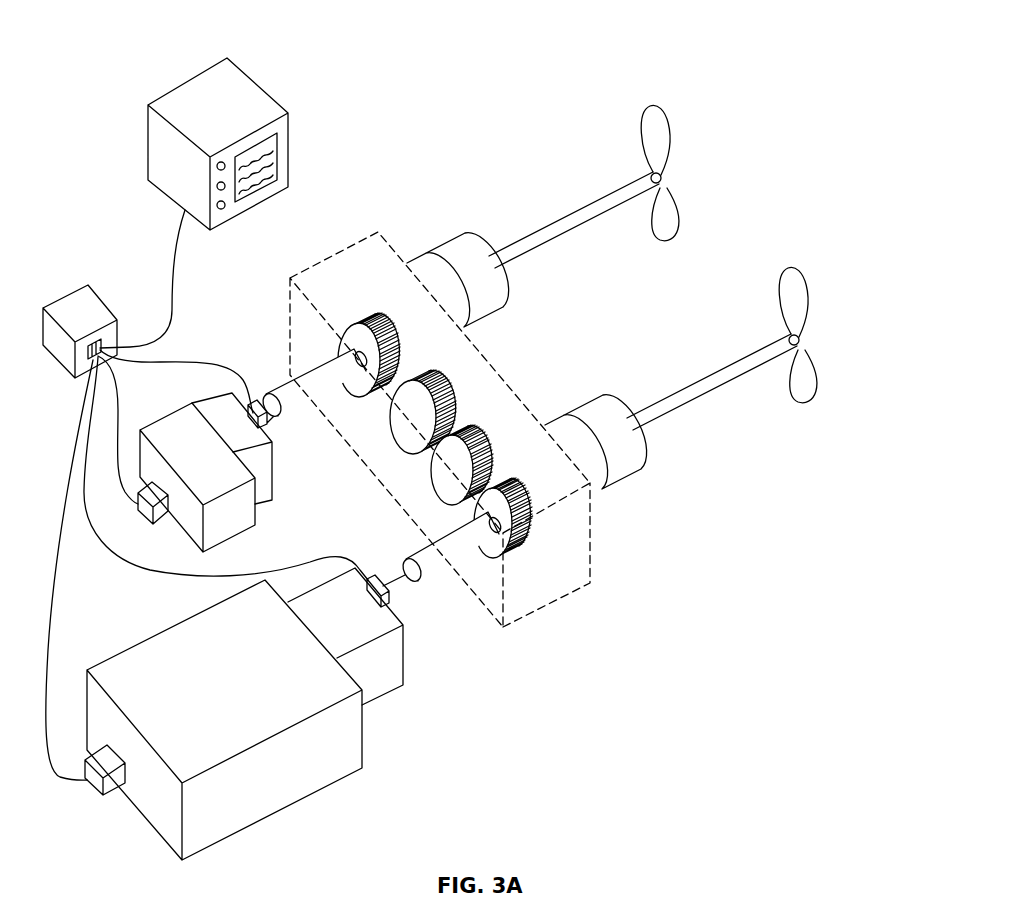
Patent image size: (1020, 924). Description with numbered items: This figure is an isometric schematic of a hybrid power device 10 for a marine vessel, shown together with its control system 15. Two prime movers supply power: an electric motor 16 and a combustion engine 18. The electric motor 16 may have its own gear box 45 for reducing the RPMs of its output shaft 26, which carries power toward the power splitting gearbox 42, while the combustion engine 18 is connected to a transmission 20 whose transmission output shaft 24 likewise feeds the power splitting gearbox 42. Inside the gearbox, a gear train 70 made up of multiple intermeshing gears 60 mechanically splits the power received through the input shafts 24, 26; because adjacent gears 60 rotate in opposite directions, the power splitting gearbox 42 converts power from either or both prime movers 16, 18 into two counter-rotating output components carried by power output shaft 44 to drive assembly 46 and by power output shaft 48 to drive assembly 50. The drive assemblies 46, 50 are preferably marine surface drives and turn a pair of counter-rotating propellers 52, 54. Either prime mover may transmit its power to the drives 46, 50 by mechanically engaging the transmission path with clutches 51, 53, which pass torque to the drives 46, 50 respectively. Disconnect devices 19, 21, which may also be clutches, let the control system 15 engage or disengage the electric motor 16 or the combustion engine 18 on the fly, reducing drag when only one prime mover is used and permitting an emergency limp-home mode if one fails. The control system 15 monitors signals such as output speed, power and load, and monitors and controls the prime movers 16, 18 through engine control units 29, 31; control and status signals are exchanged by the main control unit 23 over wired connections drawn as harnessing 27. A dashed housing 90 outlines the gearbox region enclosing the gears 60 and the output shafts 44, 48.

The hybrid power device 10 is at (491, 96).
The control system 15 is at (127, 50).
The electric motor 16 is at (211, 467).
The combustion engine 18 is at (233, 699).
The disconnect device 19 is at (271, 430).
The transmission 20 is at (356, 629).
The disconnect device 21 is at (377, 578).
The main control unit 23 is at (81, 300).
The transmission output shaft 24 is at (442, 570).
The output shaft 26 is at (289, 382).
The harnessing 27 is at (78, 393).
The engine control unit 29 is at (253, 97).
The engine control unit 31 is at (108, 788).
The power splitting gearbox 42 is at (553, 558).
The power output shaft 44 is at (538, 227).
The gear box 45 is at (232, 436).
The drive assembly 46 is at (572, 227).
The power output shaft 48 is at (665, 418).
The drive assembly 50 is at (712, 390).
The clutch 51 is at (463, 322).
The propeller 52 is at (806, 393).
The clutch 53 is at (596, 483).
The propeller 54 is at (664, 125).
The gears 60 is at (451, 457).
The gear train 70 is at (399, 431).
The gear housing 90 is at (321, 353).